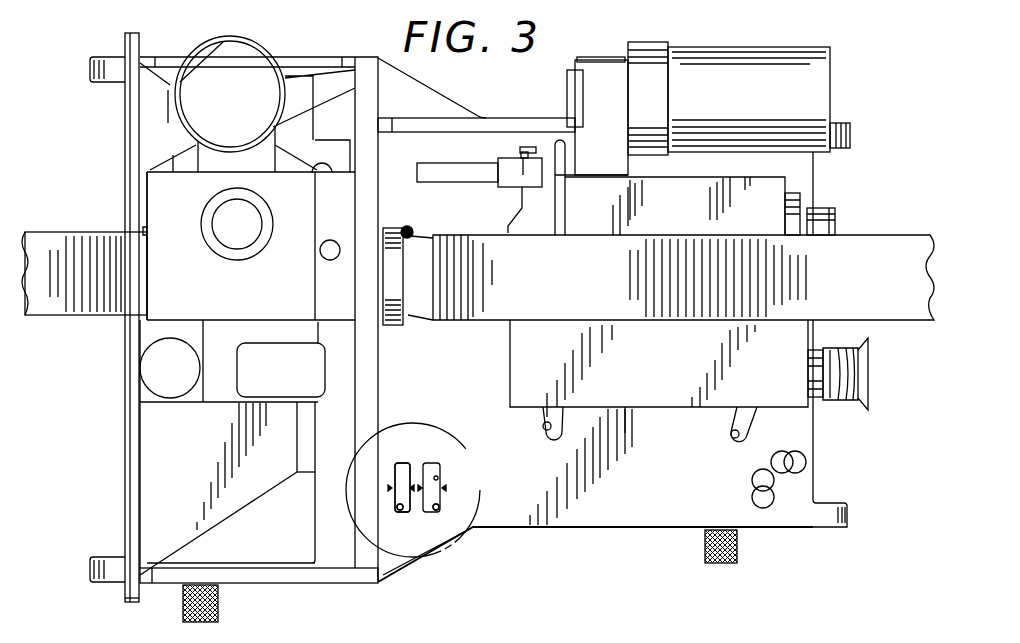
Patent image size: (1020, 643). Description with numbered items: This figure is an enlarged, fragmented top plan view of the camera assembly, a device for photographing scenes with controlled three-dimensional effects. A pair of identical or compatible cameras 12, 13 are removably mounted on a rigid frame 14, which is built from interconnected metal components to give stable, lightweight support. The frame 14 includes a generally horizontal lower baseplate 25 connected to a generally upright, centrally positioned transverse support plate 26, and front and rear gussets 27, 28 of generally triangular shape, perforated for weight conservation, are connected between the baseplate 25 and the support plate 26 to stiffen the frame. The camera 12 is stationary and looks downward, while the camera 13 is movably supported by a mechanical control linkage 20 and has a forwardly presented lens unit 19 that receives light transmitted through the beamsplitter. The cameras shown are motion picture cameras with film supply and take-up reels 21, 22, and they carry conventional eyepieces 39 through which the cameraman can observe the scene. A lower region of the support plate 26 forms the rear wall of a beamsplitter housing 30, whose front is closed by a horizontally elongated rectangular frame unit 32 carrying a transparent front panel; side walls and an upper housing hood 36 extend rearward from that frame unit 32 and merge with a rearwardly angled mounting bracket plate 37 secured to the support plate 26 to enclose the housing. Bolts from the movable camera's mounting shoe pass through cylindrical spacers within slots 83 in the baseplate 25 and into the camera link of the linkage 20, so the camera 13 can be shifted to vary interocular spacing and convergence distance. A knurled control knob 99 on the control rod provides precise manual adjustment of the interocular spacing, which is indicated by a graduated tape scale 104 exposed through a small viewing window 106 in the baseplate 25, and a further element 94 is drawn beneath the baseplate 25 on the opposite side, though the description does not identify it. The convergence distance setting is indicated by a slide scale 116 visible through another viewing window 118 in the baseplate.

The camera 12 is at (146, 324).
The camera 13 is at (611, 55).
The frame 14 is at (393, 579).
The lens unit 19 is at (410, 320).
The mechanical control linkage 20 is at (462, 546).
The reel 21 is at (630, 243).
The reel 22 is at (752, 245).
The baseplate 25 is at (633, 523).
The transverse support plate 26 is at (378, 406).
The front gusset 27 is at (247, 583).
The rear gusset 28 is at (462, 123).
The beamsplitter housing 30 is at (122, 391).
The frame unit 32 is at (133, 604).
The upper housing hood 36 is at (155, 452).
The mounting bracket plate 37 is at (292, 556).
The eyepiece 39 is at (850, 405).
The slot 83 is at (548, 437).
The foot 94 is at (205, 625).
The control knob 99 is at (740, 548).
The graduated tape scale 104 is at (440, 478).
The viewing window 106 is at (440, 505).
The slide scale 116 is at (413, 463).
The viewing window 118 is at (400, 512).